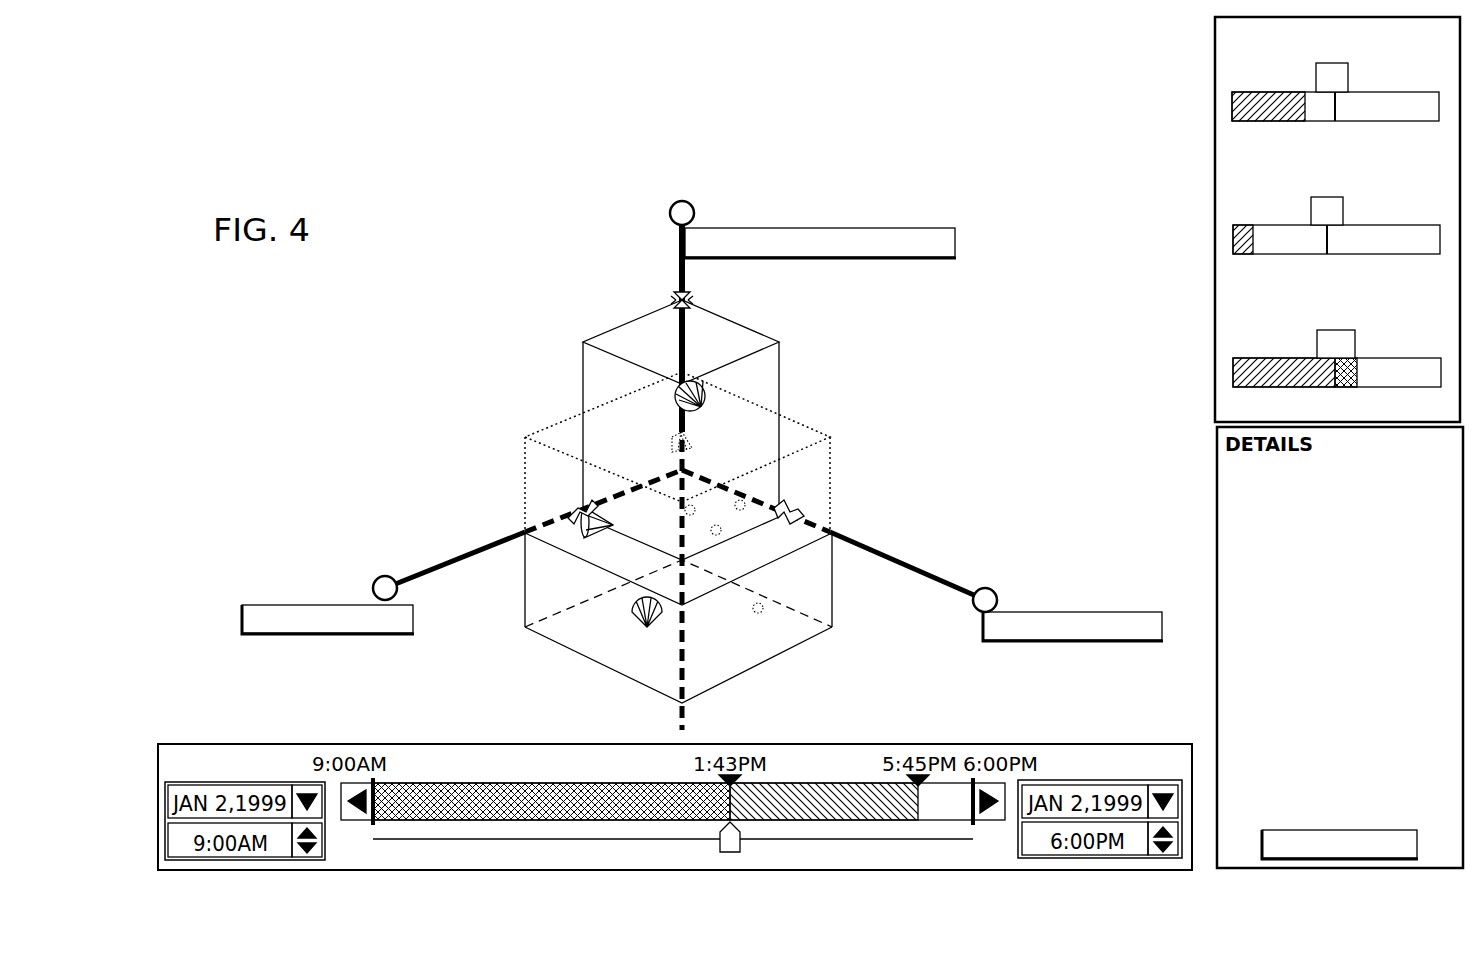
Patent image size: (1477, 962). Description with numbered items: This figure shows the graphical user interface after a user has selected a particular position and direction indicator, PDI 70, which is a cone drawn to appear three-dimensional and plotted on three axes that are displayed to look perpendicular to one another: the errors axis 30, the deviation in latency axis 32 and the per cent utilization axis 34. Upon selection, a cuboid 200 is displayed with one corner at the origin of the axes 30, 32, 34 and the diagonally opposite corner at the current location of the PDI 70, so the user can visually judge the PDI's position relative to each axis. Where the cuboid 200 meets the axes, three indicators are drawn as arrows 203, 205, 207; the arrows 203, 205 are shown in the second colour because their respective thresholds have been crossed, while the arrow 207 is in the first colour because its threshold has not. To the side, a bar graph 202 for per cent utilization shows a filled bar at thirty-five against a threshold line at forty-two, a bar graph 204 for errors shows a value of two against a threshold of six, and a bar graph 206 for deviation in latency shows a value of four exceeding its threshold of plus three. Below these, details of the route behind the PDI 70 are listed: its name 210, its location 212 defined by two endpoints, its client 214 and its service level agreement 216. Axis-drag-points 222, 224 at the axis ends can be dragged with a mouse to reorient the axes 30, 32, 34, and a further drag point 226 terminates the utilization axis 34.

The errors axis 30 is at (932, 568).
The deviation in latency axis 32 is at (682, 268).
The per cent utilization axis 34 is at (457, 556).
The position and direction indicator 70 is at (703, 404).
The cuboid 200 is at (780, 378).
The bar graph for per cent utilization 202 is at (1208, 28).
The arrow 203 is at (800, 511).
The bar graph for errors 204 is at (1208, 165).
The arrow 205 is at (690, 300).
The bar graph for deviation in latency 206 is at (1208, 300).
The arrow 207 is at (576, 511).
The route name 210 is at (1210, 465).
The route location 212 is at (1210, 690).
The route client 214 is at (1210, 698).
The service level agreement 216 is at (1212, 763).
The axis-drag-point 222 is at (996, 594).
The axis-drag-point 224 is at (670, 213).
The percent utilization axis end node 226 is at (376, 582).